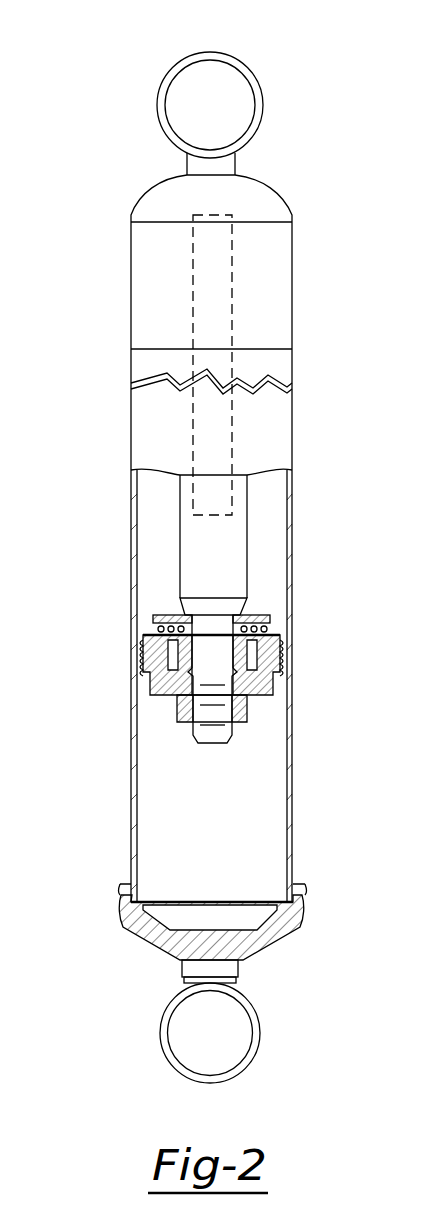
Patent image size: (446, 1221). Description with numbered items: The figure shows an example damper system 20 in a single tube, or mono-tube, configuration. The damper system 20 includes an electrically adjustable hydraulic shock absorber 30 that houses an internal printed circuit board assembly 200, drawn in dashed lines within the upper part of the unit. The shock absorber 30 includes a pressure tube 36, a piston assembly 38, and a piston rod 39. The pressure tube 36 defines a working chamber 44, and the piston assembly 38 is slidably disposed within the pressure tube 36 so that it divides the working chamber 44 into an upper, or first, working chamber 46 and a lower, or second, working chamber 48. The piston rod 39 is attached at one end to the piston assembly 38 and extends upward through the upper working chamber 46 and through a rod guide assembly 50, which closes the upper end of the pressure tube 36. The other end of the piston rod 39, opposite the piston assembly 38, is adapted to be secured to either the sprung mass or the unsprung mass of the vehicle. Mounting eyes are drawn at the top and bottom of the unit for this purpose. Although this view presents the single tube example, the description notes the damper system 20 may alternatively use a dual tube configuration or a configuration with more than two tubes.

The damper system 20 is at (303, 102).
The rod guide assembly 50 is at (223, 197).
The printed circuit board assembly 200 is at (226, 312).
The pressure tube 36 is at (292, 431).
The shock absorber 30 is at (131, 577).
The upper working chamber 46 is at (265, 547).
The piston rod 39 is at (228, 586).
The piston assembly 38 is at (263, 653).
The lower working chamber 48 is at (162, 724).
The working chamber 44 is at (223, 885).